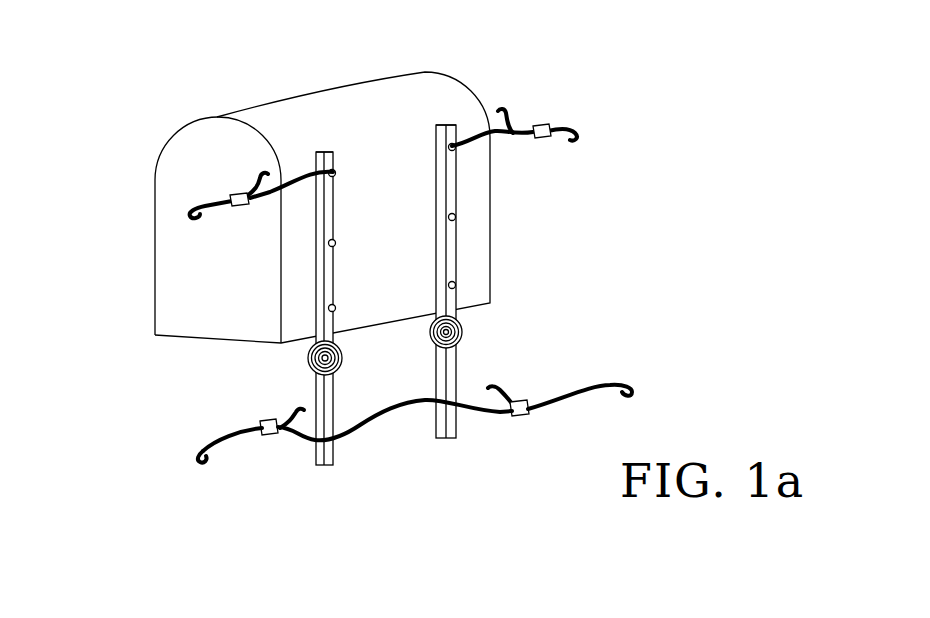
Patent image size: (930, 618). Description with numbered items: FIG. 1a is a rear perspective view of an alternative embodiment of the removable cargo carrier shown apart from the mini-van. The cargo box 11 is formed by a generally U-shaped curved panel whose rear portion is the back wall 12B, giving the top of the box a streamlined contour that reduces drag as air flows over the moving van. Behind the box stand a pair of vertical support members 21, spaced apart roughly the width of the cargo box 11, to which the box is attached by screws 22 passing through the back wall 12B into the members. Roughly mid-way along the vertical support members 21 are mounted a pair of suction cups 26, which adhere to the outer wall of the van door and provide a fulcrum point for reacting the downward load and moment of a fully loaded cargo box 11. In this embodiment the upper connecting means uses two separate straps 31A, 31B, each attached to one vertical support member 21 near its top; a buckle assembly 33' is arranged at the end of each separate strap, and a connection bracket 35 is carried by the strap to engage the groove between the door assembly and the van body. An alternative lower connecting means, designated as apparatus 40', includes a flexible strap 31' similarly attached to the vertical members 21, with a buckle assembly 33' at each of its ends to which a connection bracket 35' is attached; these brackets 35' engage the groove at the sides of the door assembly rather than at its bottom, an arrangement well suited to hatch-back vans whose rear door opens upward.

The cargo box 11 is at (232, 112).
The back wall 12B is at (418, 209).
The vertical support members 21 is at (336, 158).
The screws 22 is at (338, 305).
The suction cups 26 is at (308, 360).
The separate strap 31A is at (284, 200).
The separate strap 31B is at (498, 128).
The flexible strap 31' is at (415, 440).
The buckle assembly 33' is at (417, 299).
The connection bracket 35 is at (420, 152).
The connection bracket 35' is at (452, 448).
The lower connecting means 40' is at (431, 453).